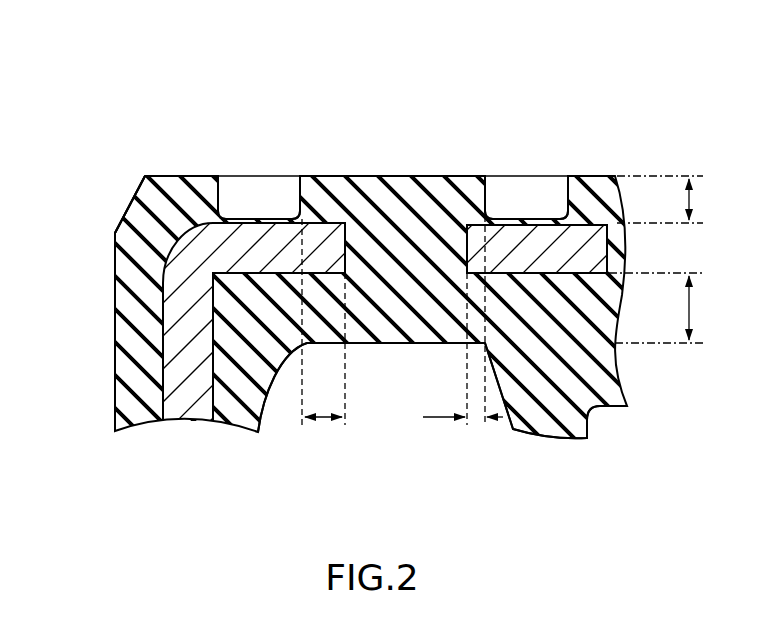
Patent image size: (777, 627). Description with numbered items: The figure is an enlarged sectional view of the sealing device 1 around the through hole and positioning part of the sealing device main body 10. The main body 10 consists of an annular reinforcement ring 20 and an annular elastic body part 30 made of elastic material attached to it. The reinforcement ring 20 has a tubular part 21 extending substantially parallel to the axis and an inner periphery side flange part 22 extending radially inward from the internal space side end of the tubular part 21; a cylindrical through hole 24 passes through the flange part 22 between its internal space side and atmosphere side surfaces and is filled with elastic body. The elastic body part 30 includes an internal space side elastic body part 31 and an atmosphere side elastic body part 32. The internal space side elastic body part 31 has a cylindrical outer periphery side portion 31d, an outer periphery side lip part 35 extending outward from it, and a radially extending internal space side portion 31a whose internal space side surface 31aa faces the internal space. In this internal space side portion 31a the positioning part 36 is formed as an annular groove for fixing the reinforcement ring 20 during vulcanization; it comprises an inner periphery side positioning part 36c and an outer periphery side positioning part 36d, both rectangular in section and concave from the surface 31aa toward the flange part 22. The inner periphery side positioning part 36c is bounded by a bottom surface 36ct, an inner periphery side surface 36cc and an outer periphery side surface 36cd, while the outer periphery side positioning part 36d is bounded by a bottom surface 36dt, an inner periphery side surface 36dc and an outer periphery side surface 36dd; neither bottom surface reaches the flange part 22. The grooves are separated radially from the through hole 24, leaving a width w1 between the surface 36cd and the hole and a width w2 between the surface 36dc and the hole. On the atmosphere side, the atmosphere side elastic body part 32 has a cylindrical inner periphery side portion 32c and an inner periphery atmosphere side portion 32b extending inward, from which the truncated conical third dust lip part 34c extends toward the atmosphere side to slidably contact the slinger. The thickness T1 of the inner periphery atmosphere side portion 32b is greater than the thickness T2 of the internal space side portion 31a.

The sealing device 1 is at (616, 99).
The sealing device main body 10 is at (115, 208).
The reinforcement ring 20 is at (160, 321).
The tubular part 21 is at (183, 388).
The inner periphery side flange part 22 is at (587, 250).
The through hole 24 is at (388, 240).
The elastic body part 30 is at (113, 353).
The internal space side elastic body part 31 is at (419, 173).
The internal space side portion 31a is at (373, 197).
The internal space side surface 31aa is at (615, 175).
The outer periphery side portion 31d is at (140, 358).
The atmosphere side elastic body part 32 is at (396, 362).
The inner periphery atmosphere side portion 32b is at (375, 344).
The inner periphery side portion 32c is at (238, 402).
The third dust lip part 34c is at (547, 417).
The outer periphery side lip part 35 is at (124, 259).
The positioning part 36 is at (189, 165).
The inner periphery side positioning part 36c is at (507, 186).
The inner periphery side surface 36cc is at (565, 195).
The outer periphery side surface 36cd is at (490, 200).
The bottom surface 36ct is at (545, 213).
The outer periphery side positioning part 36d is at (241, 189).
The inner periphery side surface 36dc is at (299, 198).
The outer periphery side surface 36dd is at (225, 200).
The bottom surface 36dt is at (280, 213).
The thickness T1 is at (668, 308).
The thickness T2 is at (672, 199).
The width w1 is at (462, 300).
The width w2 is at (323, 322).